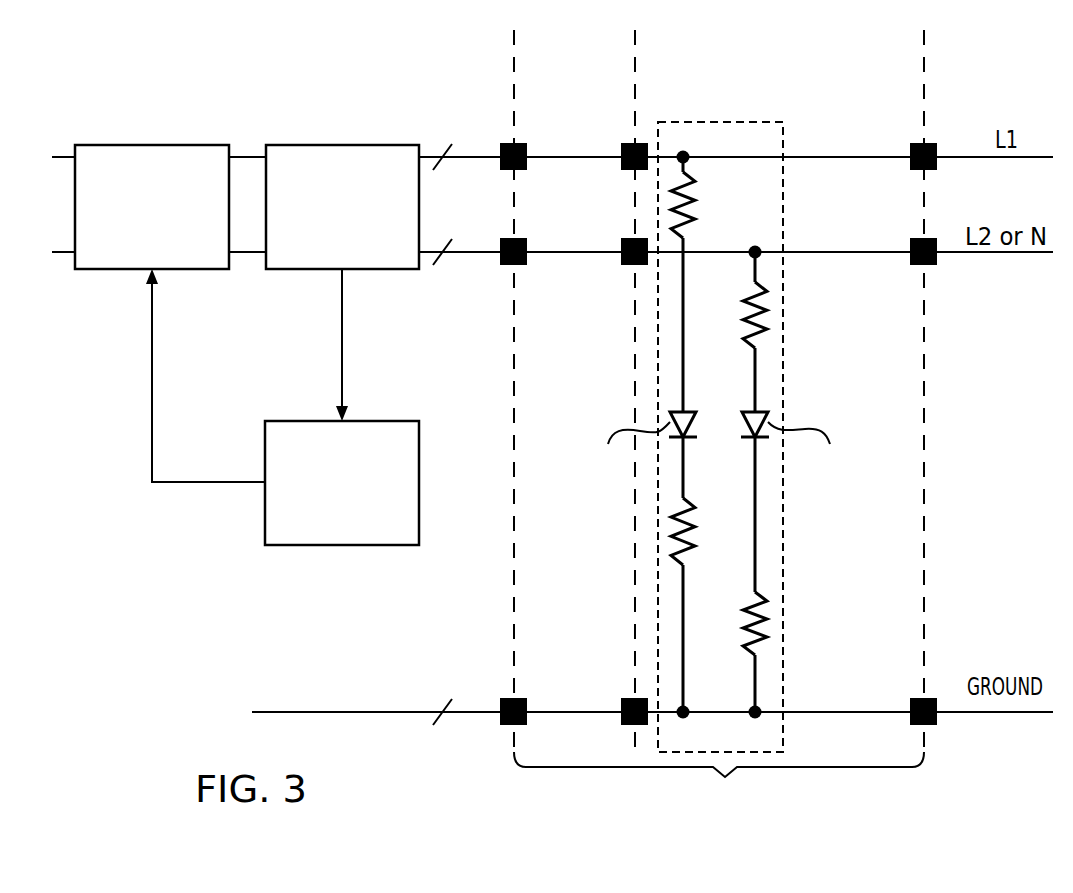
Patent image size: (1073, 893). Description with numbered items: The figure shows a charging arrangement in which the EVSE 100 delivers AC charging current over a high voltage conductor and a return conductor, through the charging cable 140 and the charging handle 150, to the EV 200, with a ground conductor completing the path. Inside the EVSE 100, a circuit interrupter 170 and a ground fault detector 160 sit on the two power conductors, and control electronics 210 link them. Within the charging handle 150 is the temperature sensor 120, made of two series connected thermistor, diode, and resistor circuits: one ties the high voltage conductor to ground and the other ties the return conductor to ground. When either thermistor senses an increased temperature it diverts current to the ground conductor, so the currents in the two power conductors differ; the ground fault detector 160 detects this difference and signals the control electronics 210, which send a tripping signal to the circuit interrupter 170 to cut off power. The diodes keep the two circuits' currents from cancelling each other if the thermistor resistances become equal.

The EVSE 100 is at (480, 390).
The temperature sensor 120 is at (785, 200).
The charging cable 140 is at (598, 390).
The charging handle 150 is at (779, 376).
The ground fault detector 160 is at (343, 145).
The circuit interrupter 170 is at (97, 270).
The EV 200 is at (967, 390).
The control electronics 210 is at (342, 546).